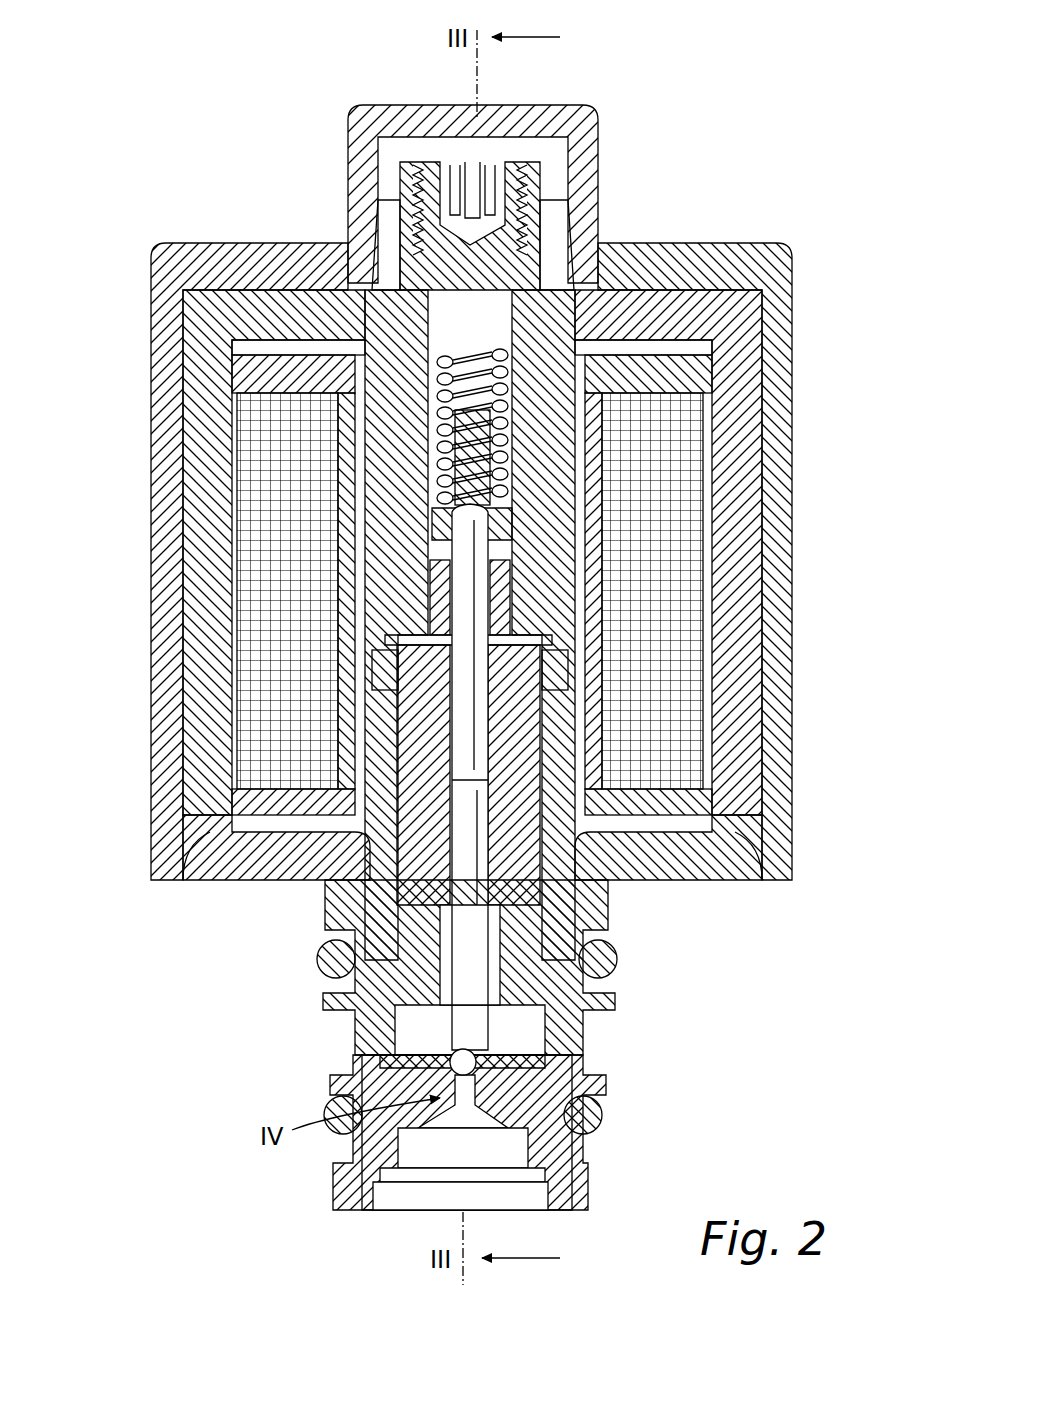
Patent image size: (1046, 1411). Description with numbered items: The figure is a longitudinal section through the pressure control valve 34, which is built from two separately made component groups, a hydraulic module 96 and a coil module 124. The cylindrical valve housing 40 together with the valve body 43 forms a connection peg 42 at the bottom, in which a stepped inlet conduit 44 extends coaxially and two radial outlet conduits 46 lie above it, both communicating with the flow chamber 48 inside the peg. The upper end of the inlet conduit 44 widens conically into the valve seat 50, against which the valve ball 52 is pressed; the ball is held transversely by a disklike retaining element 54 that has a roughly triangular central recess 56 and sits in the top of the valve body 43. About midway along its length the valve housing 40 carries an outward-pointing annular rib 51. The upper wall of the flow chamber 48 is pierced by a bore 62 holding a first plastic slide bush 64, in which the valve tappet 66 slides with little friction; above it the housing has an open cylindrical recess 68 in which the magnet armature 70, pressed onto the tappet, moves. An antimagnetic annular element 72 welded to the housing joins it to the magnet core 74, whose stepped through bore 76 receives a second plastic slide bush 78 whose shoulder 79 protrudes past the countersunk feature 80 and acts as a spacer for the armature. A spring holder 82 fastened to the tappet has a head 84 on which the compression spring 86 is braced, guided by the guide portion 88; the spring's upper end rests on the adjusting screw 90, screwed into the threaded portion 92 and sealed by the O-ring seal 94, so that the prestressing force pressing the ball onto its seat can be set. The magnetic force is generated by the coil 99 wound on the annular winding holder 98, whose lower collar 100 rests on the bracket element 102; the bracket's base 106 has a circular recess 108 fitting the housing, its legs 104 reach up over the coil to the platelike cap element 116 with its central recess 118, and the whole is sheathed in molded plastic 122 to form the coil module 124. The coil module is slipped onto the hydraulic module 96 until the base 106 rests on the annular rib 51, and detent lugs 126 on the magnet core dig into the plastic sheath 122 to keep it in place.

The pressure control valve 34 is at (208, 150).
The valve housing 40 is at (580, 890).
The connection peg 42 is at (605, 1088).
The valve body 43 is at (555, 1145).
The inlet conduit 44 is at (420, 1148).
The outlet conduits 46 is at (590, 1000).
The flow chamber 48 is at (420, 1030).
The valve seat 50 is at (462, 1065).
The annular rib 51 is at (430, 935).
The valve ball 52 is at (560, 1105).
The retaining element 54 is at (540, 1062).
The recess 56 is at (520, 1040).
The bore 62 is at (360, 975).
The first plastic slide bush 64 is at (328, 948).
The valve tappet 66 is at (460, 860).
The recess 68 is at (585, 912).
The magnet armature 70 is at (525, 745).
The annular element 72 is at (520, 690).
The magnet core 74 is at (545, 412).
The through bore 76 is at (515, 385).
The second plastic slide bush 78 is at (500, 575).
The shoulder 79 is at (500, 608).
The countersunk feature 80 is at (350, 665).
The spring holder 82 is at (520, 520).
The head 84 is at (440, 520).
The compression spring 86 is at (335, 362).
The guide portion 88 is at (480, 415).
The adjusting screw 90 is at (430, 172).
The threaded portion 92 is at (412, 240).
The O-ring seal 94 is at (345, 292).
The hydraulic module 96 is at (276, 1170).
The winding holder 98 is at (655, 252).
The coil 99 is at (675, 430).
The collar 100 is at (585, 830).
The bracket element 102 is at (775, 758).
The legs 104 is at (740, 660).
The base 106 is at (270, 862).
The recess 108 is at (300, 822).
The cap element 116 is at (700, 250).
The recess 118 is at (620, 250).
The plastic sheath 122 is at (770, 250).
The coil module 124 is at (729, 190).
The detent lugs 126 is at (365, 198).